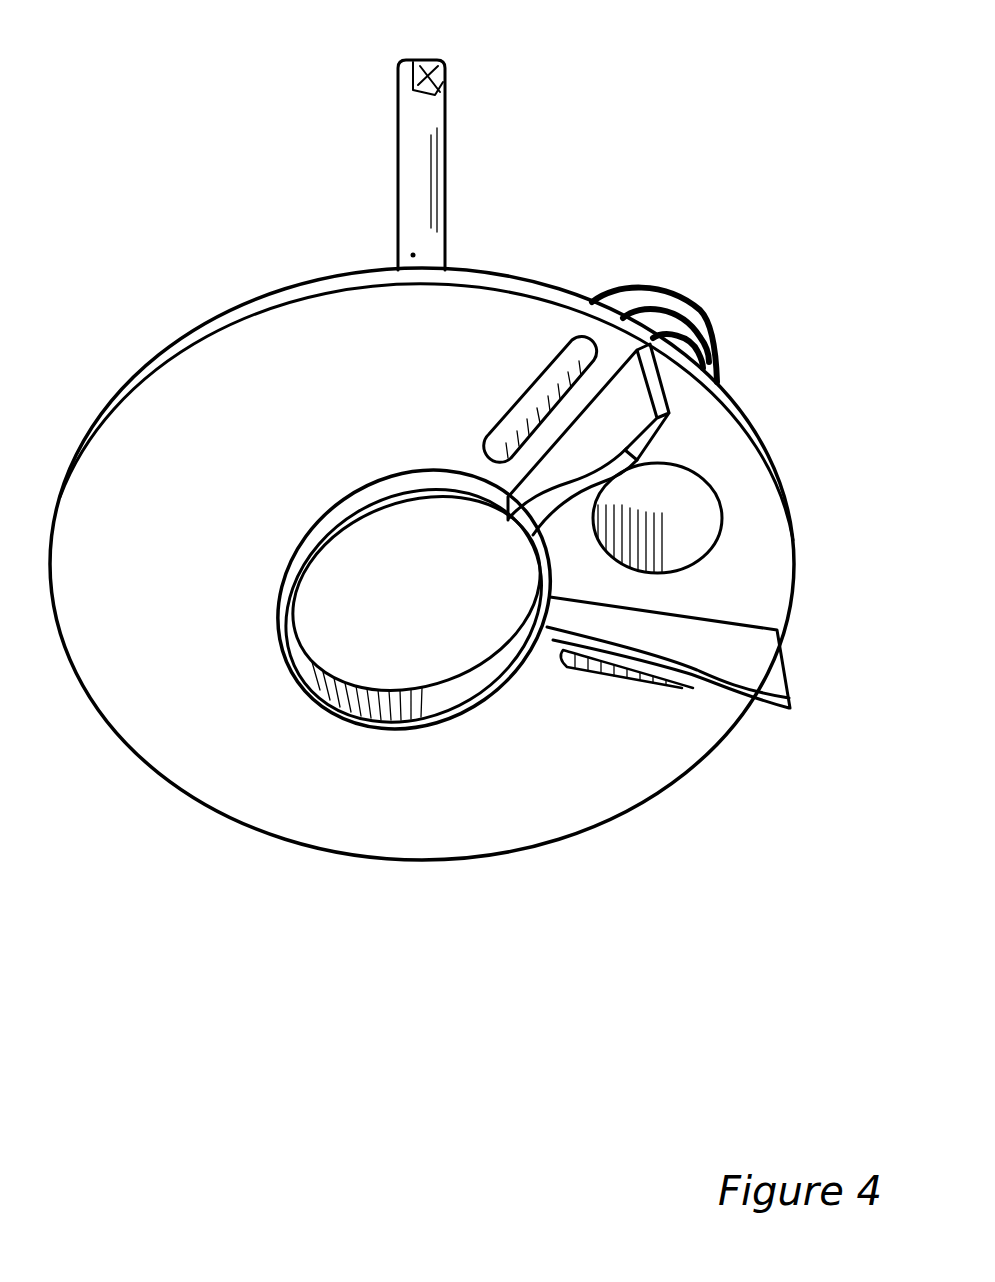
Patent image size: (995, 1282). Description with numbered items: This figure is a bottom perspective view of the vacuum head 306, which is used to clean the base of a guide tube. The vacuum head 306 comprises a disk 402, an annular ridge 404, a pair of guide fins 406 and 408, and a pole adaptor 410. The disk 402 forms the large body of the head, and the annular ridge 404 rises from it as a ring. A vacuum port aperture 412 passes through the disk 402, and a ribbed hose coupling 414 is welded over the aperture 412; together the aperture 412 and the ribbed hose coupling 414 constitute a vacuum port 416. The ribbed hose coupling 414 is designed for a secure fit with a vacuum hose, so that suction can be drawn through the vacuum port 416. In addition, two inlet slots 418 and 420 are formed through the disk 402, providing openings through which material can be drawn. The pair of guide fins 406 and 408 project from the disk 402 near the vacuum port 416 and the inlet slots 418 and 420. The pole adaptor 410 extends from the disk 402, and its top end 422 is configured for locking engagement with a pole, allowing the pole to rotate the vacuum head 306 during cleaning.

The vacuum head 306 is at (150, 74).
The disk 402 is at (163, 342).
The annular ridge 404 is at (288, 645).
The guide fin 406 is at (667, 397).
The guide fin 408 is at (787, 653).
The pole adaptor 410 is at (398, 164).
The vacuum port aperture 412 is at (695, 538).
The ribbed hose coupling 414 is at (712, 342).
The vacuum port 416 is at (645, 262).
The inlet slot 418 is at (540, 387).
The inlet slot 420 is at (640, 673).
The top end 422 is at (437, 66).